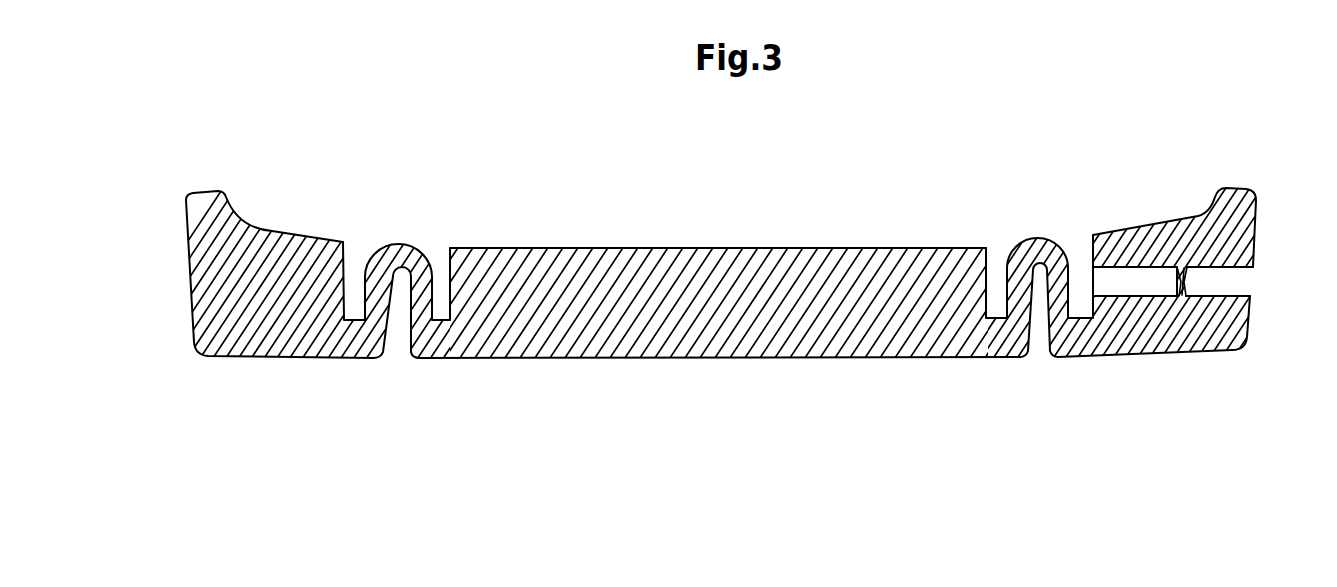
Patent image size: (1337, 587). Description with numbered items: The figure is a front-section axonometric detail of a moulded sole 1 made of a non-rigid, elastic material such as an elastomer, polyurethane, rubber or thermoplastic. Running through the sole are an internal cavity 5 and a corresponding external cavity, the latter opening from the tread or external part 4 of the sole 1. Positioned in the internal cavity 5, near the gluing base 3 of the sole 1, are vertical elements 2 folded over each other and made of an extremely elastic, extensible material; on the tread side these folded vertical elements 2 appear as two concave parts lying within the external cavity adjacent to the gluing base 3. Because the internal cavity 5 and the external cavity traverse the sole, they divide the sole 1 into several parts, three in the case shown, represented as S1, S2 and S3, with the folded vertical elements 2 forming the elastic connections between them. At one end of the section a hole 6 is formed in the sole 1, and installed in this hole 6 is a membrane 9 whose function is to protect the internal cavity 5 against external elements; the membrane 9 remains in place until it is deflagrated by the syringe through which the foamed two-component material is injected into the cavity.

The sole 1 is at (187, 262).
The folded vertical elements 2 is at (407, 238).
The gluing base 3 is at (1153, 218).
The tread or external part 4 is at (730, 358).
The internal cavity 5 is at (359, 267).
The hole 6 is at (1253, 282).
The membrane 9 is at (1183, 272).
The first part of the sole S1 is at (272, 289).
The second part of the sole S2 is at (712, 297).
The third part of the sole S3 is at (1177, 318).